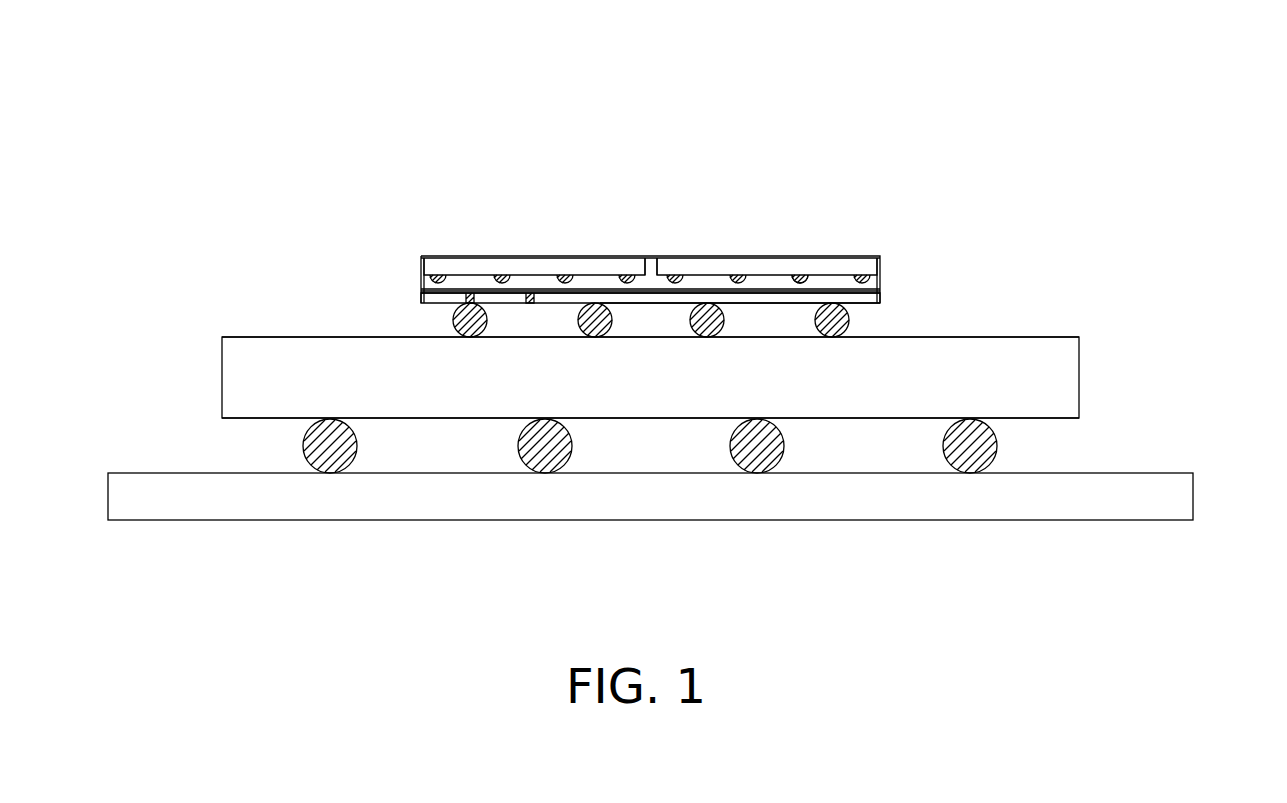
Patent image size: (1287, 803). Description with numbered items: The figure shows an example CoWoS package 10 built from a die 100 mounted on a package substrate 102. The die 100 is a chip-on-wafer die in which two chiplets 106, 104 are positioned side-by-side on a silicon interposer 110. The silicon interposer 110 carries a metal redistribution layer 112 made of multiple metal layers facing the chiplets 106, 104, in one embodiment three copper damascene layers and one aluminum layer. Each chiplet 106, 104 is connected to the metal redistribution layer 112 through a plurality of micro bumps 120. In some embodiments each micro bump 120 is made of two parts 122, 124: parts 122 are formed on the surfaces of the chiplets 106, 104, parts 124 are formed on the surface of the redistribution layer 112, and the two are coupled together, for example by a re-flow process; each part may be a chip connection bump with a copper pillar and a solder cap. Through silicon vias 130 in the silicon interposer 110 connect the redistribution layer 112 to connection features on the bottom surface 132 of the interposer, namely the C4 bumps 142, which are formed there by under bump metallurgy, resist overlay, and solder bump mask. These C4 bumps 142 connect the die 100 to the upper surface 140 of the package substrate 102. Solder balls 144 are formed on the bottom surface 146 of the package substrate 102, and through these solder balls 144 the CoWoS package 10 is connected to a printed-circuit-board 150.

The CoWoS package 10 is at (1164, 78).
The die 100 is at (873, 200).
The package substrate 102 is at (1073, 389).
The chiplet 104 is at (863, 257).
The chiplet 106 is at (424, 258).
The silicon interposer 110 is at (881, 286).
The metal redistribution layer 112 is at (423, 291).
The micro bump 120 is at (440, 281).
The part of micro bump 122 is at (798, 279).
The part of micro bump 124 is at (813, 276).
The through silicon via 130 is at (462, 297).
The bottom surface of silicon interposer 132 is at (871, 304).
The upper surface of package substrate 140 is at (1055, 336).
The C4 bump 142 is at (470, 324).
The solder ball 144 is at (330, 458).
The bottom surface of package substrate 146 is at (1056, 419).
The printed-circuit-board 150 is at (1188, 504).